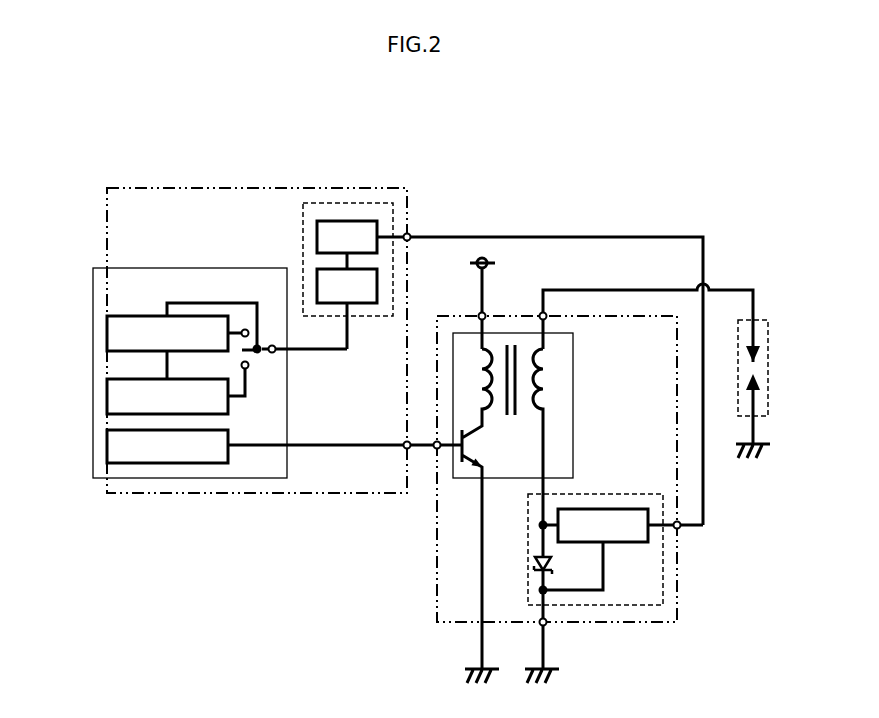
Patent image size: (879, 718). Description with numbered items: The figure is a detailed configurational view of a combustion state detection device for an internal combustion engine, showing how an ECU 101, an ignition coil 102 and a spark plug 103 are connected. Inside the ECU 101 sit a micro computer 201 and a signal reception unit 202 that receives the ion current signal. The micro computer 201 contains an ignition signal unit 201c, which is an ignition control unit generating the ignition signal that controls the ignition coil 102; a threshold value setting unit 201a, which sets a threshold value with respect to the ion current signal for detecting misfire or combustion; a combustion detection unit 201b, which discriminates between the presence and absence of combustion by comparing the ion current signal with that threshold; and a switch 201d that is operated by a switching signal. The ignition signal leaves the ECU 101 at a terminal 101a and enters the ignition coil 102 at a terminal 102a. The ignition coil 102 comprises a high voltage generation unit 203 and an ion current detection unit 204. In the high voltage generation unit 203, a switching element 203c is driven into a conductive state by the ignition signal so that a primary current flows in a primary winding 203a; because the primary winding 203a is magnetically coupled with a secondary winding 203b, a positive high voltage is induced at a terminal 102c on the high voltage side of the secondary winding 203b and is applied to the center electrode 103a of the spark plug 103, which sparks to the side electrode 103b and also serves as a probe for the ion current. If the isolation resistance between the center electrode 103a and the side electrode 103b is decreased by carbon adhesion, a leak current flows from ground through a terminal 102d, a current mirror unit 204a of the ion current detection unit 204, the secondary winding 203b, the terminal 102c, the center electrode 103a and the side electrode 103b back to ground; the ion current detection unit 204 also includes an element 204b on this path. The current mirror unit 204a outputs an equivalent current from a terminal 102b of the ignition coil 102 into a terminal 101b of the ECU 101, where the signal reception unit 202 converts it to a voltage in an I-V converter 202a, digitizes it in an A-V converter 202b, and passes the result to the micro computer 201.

The ECU 101 is at (228, 493).
The control unit input terminal 101a is at (407, 447).
The terminal 101b is at (407, 237).
The ignition coil 102 is at (678, 578).
The drive unit input terminal 102a is at (437, 447).
The terminal 102b is at (678, 527).
The terminal 102c is at (543, 316).
The terminal 102d is at (545, 624).
The spark plug 103 is at (758, 318).
The center electrode 103a is at (762, 353).
The side electrode 103b is at (762, 385).
The micro computer 201 is at (190, 268).
The threshold value setting unit 201a is at (107, 330).
The combustion detection unit 201b is at (107, 395).
The ignition signal unit 201c is at (107, 440).
The switch 201d is at (275, 355).
The signal reception unit 202 is at (349, 203).
The I-V converter 202a is at (317, 235).
The A-V converter 202b is at (317, 275).
The high voltage generation unit 203 is at (573, 435).
The primary winding 203a is at (480, 352).
The secondary winding 203b is at (545, 380).
The switching element 203c is at (460, 428).
The ion current detection unit 204 is at (652, 604).
The current mirror unit 204a is at (607, 509).
The Zener diode 204b is at (537, 568).